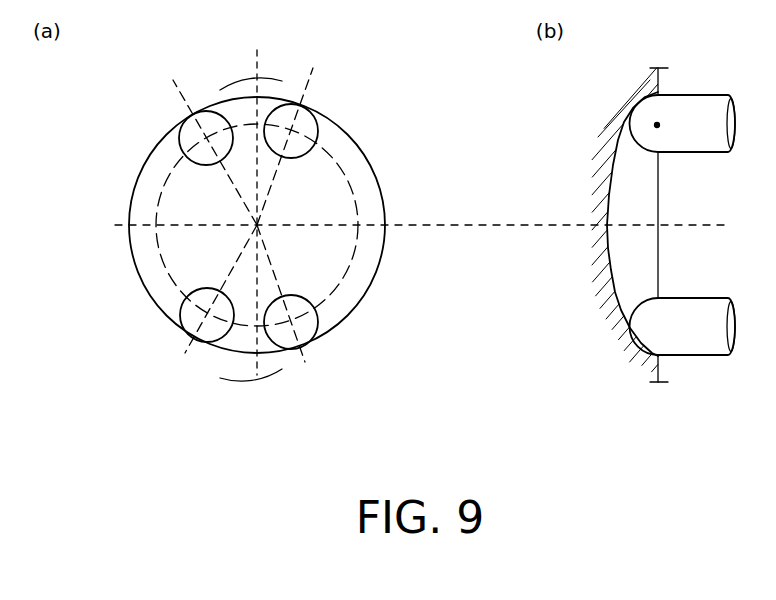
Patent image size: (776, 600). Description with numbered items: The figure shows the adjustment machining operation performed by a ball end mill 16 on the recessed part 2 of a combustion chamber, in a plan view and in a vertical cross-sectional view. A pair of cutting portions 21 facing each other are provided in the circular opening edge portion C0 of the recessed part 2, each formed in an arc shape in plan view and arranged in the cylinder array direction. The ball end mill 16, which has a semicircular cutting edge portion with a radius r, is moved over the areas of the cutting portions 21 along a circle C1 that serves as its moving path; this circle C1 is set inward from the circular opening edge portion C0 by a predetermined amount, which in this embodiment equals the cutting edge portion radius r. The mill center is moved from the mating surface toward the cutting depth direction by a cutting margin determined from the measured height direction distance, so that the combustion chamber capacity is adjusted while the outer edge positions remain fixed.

The recessed part 2 is at (196, 257).
The ball end mill 16 is at (230, 117).
The cutting portions 21 is at (263, 108).
The circular opening edge portion C0 is at (350, 138).
The circle C1 is at (159, 184).
The cutting edge portion radius r is at (638, 103).